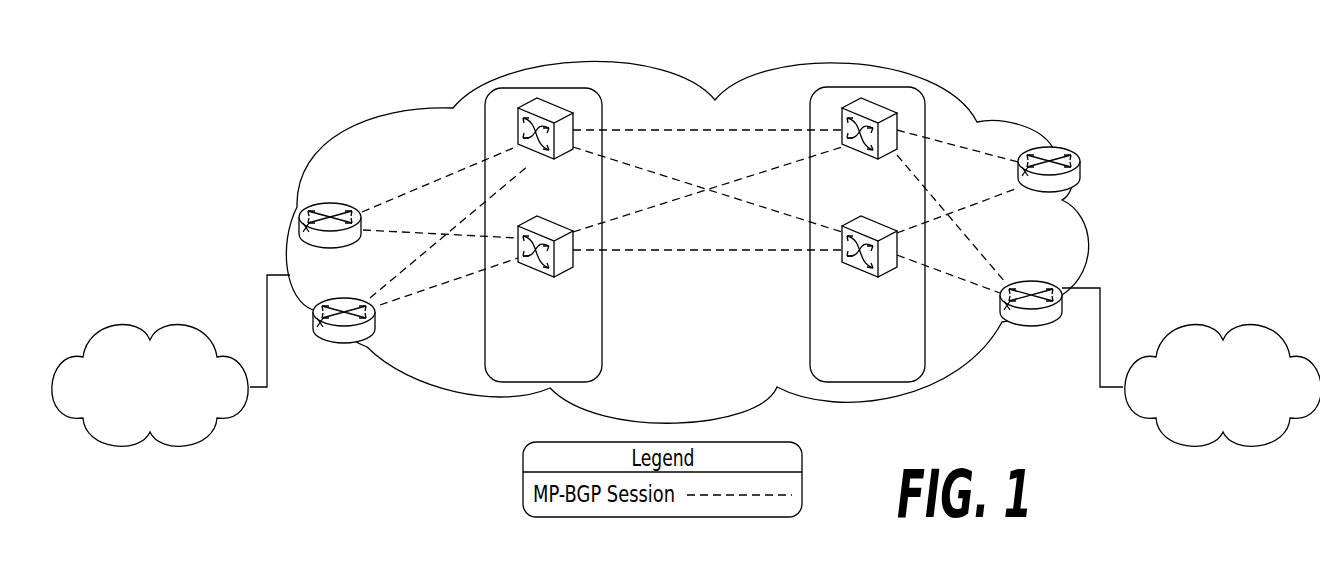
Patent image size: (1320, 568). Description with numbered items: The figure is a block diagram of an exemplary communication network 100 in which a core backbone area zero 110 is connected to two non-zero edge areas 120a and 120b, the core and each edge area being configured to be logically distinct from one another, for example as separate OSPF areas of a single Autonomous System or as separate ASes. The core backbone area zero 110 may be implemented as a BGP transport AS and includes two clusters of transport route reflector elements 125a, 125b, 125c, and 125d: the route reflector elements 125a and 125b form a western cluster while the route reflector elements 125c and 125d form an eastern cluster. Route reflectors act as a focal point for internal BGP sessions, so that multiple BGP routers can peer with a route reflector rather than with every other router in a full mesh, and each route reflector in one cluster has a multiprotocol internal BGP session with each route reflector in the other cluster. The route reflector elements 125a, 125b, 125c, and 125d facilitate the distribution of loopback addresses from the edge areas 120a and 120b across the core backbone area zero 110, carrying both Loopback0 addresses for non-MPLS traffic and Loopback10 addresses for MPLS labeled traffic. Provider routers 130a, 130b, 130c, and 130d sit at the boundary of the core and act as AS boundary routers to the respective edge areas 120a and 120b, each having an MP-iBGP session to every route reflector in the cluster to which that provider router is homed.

The communication network 100 is at (340, 80).
The core backbone area zero 110 is at (590, 56).
The non-zero edge area 120a is at (177, 325).
The non-zero edge area 120b is at (1191, 325).
The transport route reflector element 125a is at (561, 110).
The transport route reflector element 125b is at (575, 262).
The transport route reflector element 125c is at (841, 118).
The transport route reflector element 125d is at (840, 256).
The provider router 130a is at (331, 202).
The provider router 130b is at (313, 340).
The provider router 130c is at (1056, 147).
The provider router 130d is at (1061, 326).